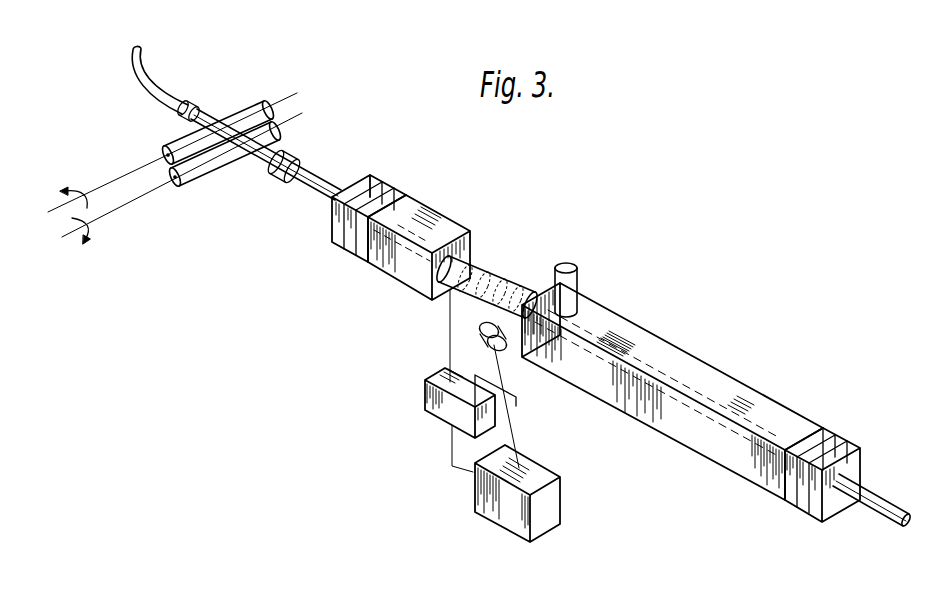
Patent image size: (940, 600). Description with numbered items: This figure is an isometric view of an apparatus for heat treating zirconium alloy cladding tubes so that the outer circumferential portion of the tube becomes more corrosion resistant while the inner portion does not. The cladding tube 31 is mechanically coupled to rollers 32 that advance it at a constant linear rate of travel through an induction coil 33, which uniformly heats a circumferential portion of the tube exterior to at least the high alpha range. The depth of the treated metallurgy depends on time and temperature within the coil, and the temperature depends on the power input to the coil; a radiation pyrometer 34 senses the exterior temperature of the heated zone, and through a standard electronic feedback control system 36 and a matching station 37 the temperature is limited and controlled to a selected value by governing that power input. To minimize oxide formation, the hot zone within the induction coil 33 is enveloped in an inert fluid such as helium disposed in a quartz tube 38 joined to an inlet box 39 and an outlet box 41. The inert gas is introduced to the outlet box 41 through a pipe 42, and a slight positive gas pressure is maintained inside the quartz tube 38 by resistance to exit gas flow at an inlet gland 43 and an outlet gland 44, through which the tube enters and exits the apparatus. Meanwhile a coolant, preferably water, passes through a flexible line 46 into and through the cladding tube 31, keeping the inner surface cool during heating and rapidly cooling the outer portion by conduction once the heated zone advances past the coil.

The cladding tube 31 is at (316, 176).
The rollers 32 is at (255, 105).
The induction coil 33 is at (473, 260).
The radiation pyrometer 34 is at (503, 346).
The electronic feedback control system 36 is at (493, 518).
The matching station 37 is at (437, 415).
The quartz tube 38 is at (531, 283).
The inlet box 39 is at (444, 216).
The outlet box 41 is at (703, 360).
The pipe 42 is at (582, 268).
The inlet gland 43 is at (331, 243).
The outlet gland 44 is at (852, 450).
The flexible line 46 is at (148, 74).